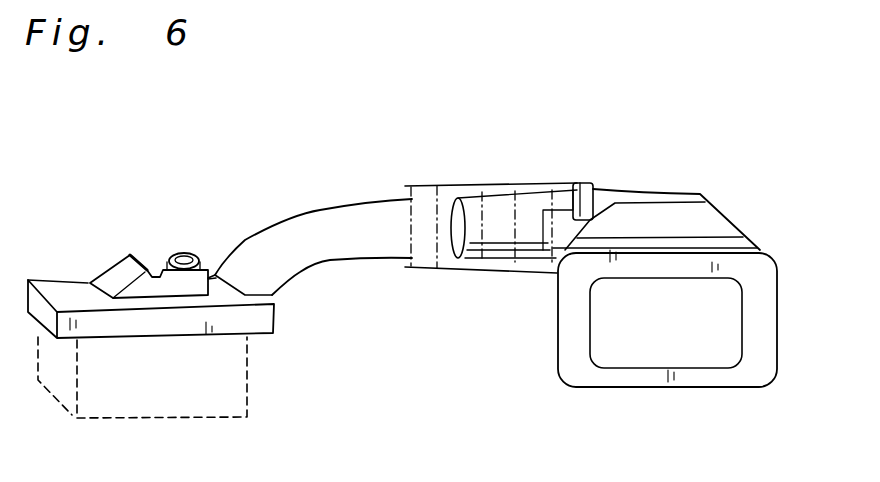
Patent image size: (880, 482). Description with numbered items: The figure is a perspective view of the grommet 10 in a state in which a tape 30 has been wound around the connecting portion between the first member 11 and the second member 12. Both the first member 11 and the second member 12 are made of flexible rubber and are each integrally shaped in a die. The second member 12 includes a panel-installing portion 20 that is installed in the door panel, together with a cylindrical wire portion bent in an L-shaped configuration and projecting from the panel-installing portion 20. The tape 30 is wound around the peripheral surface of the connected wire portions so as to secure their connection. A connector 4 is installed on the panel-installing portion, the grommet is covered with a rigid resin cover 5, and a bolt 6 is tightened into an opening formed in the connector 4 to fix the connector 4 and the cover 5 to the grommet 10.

The connector 4 is at (237, 397).
The cover 5 is at (261, 318).
The bolt 6 is at (195, 253).
The grommet 10 is at (383, 191).
The first member 11 is at (327, 207).
The second member 12 is at (663, 212).
The panel-installing portion 20 is at (575, 375).
The tape 30 is at (462, 185).